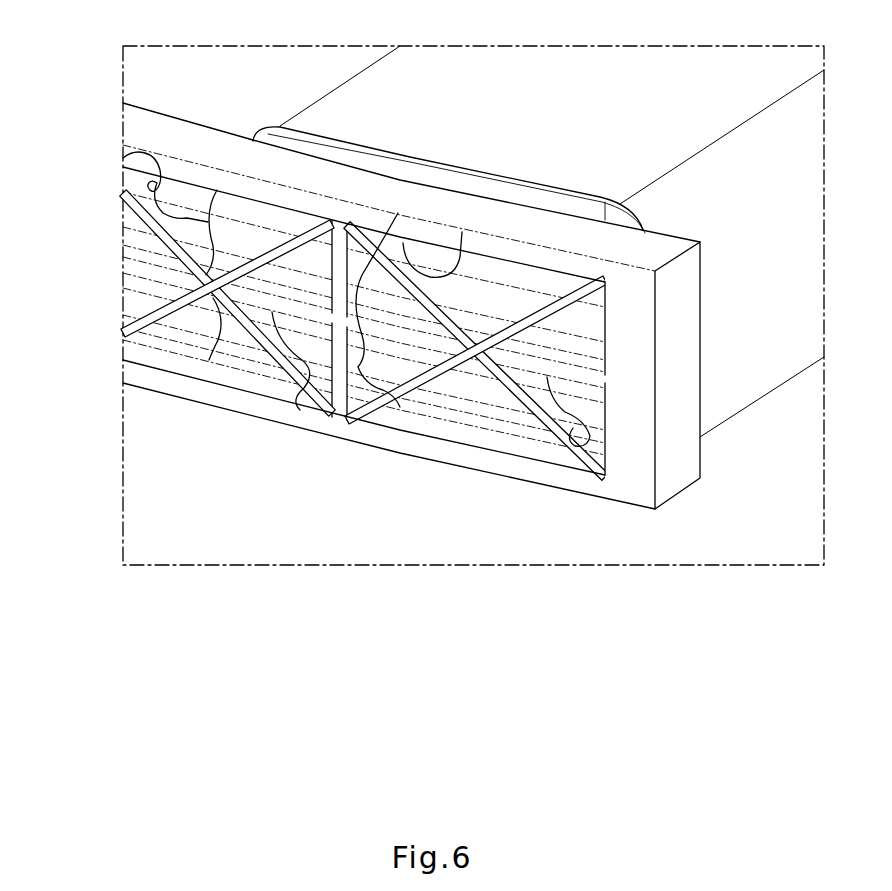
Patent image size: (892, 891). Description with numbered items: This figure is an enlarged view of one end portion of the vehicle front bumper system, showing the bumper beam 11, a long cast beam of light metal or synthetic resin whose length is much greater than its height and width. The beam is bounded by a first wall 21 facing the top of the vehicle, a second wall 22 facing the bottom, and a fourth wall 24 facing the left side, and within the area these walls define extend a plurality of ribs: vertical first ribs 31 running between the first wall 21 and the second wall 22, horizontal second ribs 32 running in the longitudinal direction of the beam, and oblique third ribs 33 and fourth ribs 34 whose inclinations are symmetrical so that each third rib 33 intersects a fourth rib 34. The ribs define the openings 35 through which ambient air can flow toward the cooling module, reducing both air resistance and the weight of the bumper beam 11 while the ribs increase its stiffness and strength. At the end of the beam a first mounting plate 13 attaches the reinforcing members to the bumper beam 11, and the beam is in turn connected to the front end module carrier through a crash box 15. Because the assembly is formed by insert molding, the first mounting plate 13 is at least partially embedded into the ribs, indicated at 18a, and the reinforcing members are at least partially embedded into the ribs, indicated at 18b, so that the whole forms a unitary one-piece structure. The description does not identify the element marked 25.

The bumper beam 11 is at (296, 462).
The first mounting plate 13 is at (527, 196).
The crash box 15 is at (597, 78).
The embedded portion of first mounting plate 18a is at (462, 232).
The embedded portion of reinforcing member 18b is at (123, 158).
The first wall 21 is at (185, 135).
The second wall 22 is at (215, 396).
The fourth wall 24 is at (680, 446).
The end block 25 is at (725, 298).
The first rib 31 is at (326, 400).
The second rib 32 is at (366, 300).
The third rib 33 is at (425, 388).
The fourth rib 34 is at (518, 405).
The opening 35 is at (303, 280).